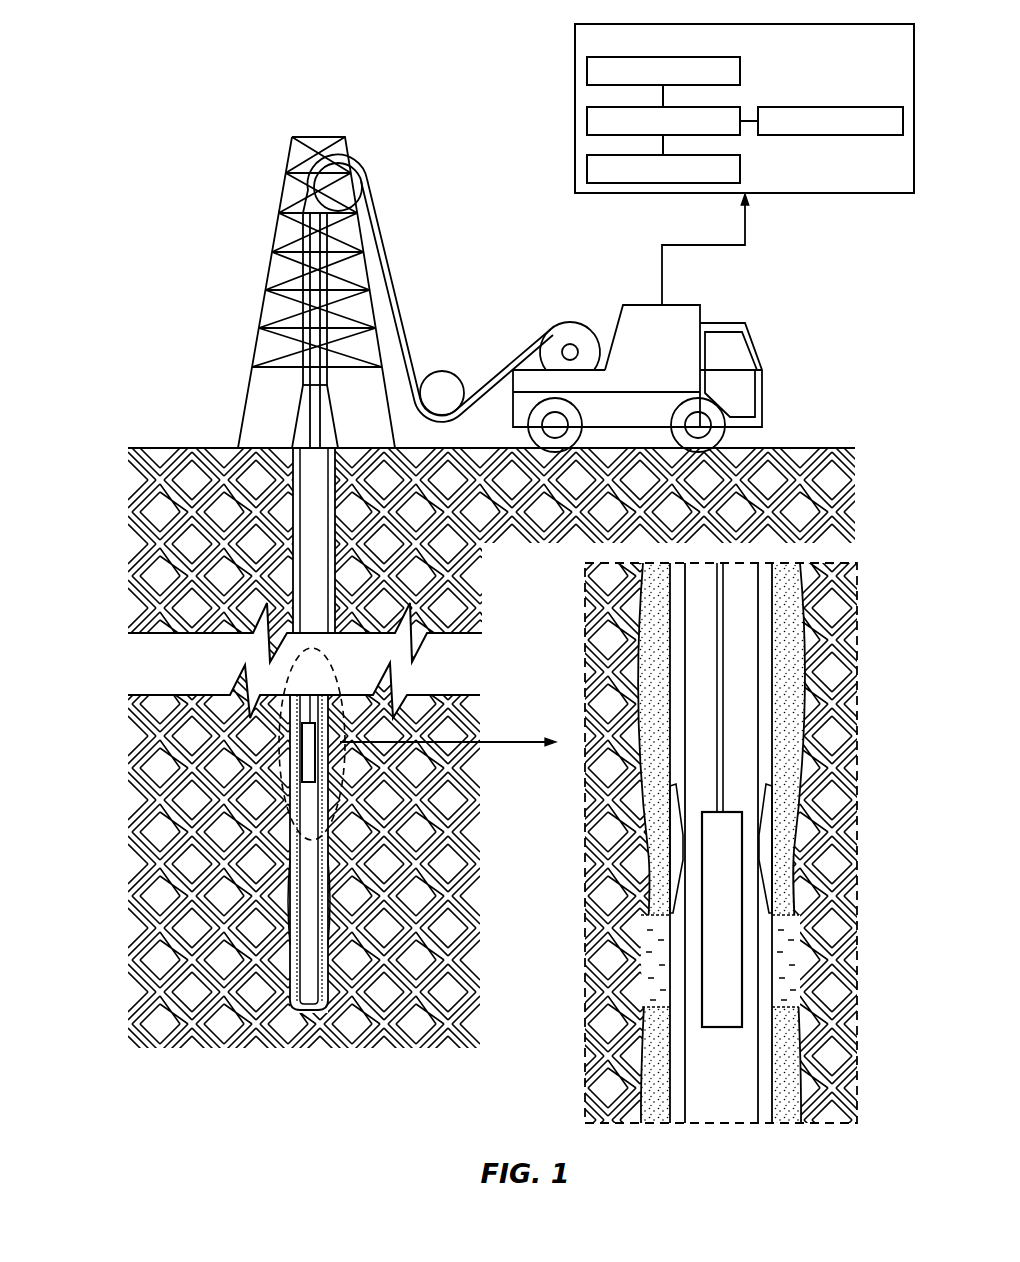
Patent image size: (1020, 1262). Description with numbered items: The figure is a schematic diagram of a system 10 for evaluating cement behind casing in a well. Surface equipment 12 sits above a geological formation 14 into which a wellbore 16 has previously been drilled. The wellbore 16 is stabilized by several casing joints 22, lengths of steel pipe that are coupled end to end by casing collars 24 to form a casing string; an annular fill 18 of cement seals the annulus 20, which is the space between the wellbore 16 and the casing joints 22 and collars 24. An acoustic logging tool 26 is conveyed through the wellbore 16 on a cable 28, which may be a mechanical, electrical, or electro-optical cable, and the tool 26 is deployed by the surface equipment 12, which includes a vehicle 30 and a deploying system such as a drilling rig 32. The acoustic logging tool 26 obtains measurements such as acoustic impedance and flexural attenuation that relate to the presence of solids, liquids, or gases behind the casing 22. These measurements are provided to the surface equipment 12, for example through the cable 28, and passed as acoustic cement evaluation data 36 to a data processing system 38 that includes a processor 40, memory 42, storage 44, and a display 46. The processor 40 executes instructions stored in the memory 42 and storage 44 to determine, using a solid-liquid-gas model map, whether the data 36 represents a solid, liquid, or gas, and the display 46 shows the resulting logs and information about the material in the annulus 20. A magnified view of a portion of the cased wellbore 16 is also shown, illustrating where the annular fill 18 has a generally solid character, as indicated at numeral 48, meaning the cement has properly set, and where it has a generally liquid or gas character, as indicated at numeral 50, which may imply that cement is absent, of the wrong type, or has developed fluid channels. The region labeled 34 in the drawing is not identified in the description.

The system 10 is at (97, 1005).
The surface equipment 12 is at (522, 214).
The geological formation 14 is at (140, 801).
The wellbore 16 is at (205, 447).
The annular fill 18 is at (280, 526).
The annulus 20 is at (279, 573).
The casing joints 22 is at (281, 930).
The casing collars 24 is at (342, 944).
The acoustic logging tool 26 is at (297, 731).
The cable 28 is at (410, 285).
The vehicle 30 is at (634, 297).
The drilling rig 32 is at (266, 205).
The treated zone 34 is at (758, 960).
The acoustic cement evaluation data 36 is at (746, 222).
The data processing system 38 is at (723, 98).
The processor 40 is at (702, 105).
The memory 42 is at (590, 71).
The storage 44 is at (734, 168).
The display 46 is at (835, 107).
The solid-character annular fill region 48 is at (788, 693).
The liquid- or gas-character annular fill region 50 is at (783, 952).